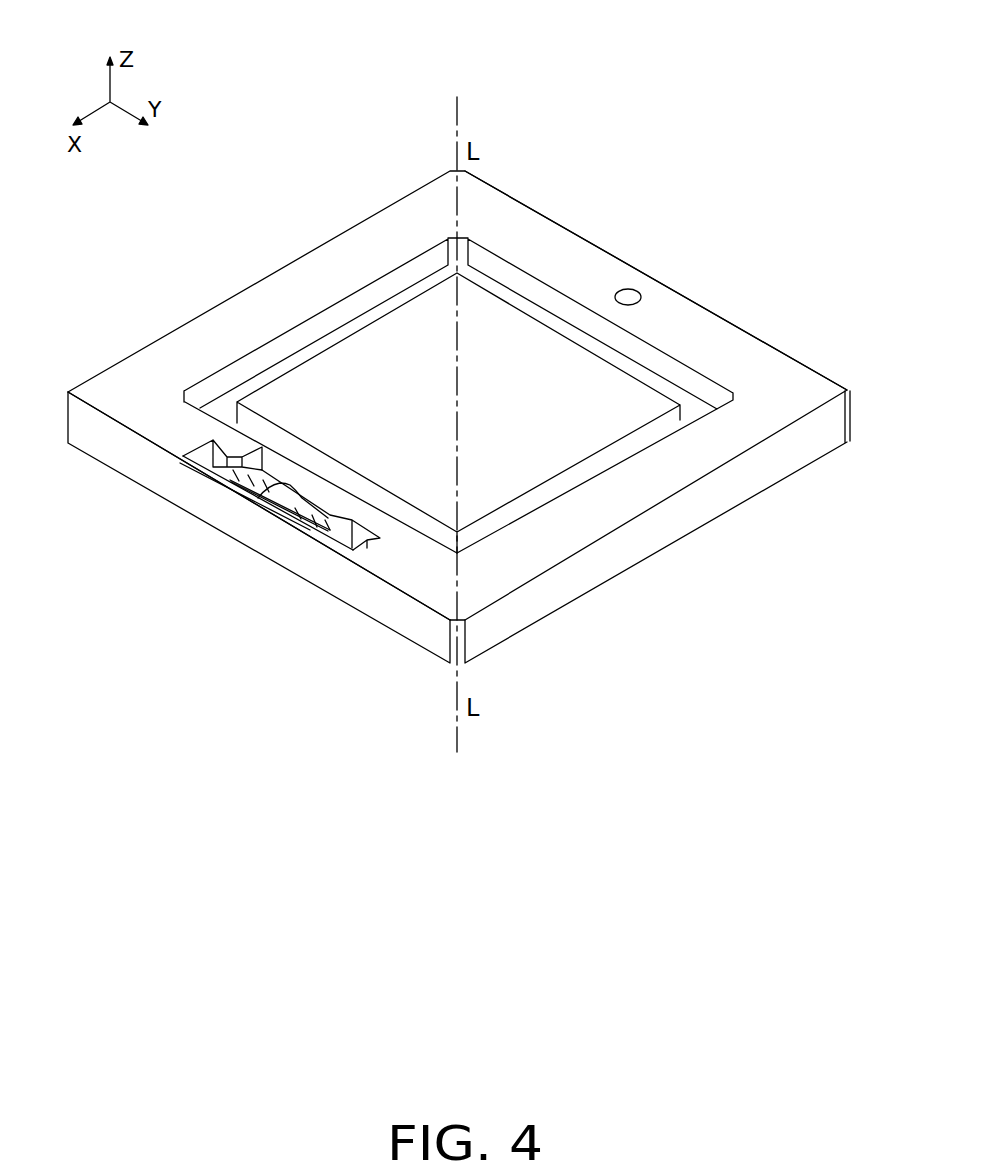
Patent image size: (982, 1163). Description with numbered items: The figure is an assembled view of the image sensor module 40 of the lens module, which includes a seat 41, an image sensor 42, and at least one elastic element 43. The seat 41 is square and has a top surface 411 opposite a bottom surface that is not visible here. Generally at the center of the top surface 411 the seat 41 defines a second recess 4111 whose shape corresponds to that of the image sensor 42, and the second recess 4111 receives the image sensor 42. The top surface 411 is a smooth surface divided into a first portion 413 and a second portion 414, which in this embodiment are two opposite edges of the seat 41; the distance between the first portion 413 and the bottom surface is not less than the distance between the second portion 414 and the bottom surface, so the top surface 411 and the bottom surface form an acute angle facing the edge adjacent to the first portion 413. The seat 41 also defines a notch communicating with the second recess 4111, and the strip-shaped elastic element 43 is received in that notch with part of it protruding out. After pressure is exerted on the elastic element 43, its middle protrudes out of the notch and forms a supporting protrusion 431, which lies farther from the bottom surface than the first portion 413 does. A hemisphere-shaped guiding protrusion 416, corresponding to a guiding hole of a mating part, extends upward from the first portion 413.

The image sensor module 40 is at (462, 50).
The seat 41 is at (459, 412).
The top surface 411 is at (493, 205).
The second recess 4111 is at (378, 315).
The first portion 413 is at (563, 250).
The second portion 414 is at (410, 568).
The guiding protrusion 416 is at (630, 295).
The image sensor 42 is at (538, 498).
The elastic element 43 is at (280, 538).
The supporting protrusion 431 is at (275, 493).